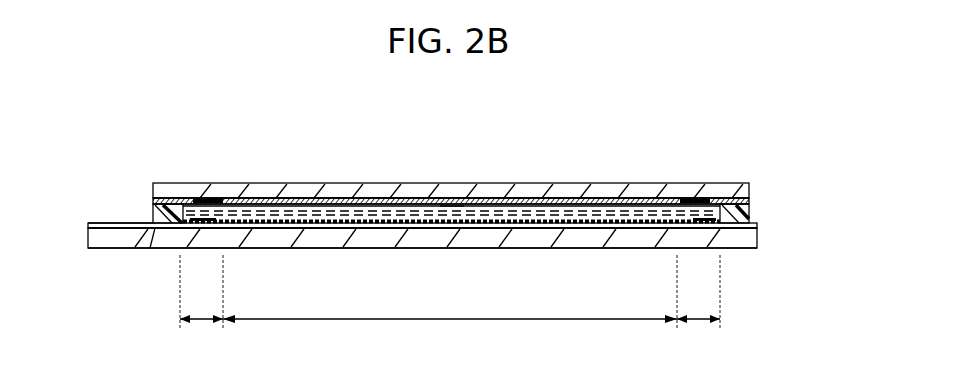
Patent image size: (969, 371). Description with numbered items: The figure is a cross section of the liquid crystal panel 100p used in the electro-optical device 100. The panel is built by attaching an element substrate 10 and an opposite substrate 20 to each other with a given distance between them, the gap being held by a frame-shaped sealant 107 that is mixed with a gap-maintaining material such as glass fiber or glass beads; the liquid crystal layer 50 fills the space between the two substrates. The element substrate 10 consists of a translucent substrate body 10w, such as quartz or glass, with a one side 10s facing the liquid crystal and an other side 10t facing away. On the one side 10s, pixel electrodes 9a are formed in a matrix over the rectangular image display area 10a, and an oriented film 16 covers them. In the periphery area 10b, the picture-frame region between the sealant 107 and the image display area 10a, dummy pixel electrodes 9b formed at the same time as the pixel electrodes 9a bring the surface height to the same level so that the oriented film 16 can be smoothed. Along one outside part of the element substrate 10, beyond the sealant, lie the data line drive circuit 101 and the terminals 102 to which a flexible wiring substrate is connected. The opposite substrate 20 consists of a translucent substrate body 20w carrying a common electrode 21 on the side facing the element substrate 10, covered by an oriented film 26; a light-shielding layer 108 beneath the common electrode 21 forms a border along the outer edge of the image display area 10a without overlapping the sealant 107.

The electro-optical device 100 is at (712, 120).
The liquid crystal panel 100p is at (450, 196).
The element substrate 10 is at (738, 251).
The one side of the element substrate 10s is at (349, 223).
The other side of the element substrate 10t is at (316, 249).
The substrate body 10w is at (758, 227).
The image display area 10a is at (450, 332).
The periphery area 10b is at (450, 302).
The opposite substrate 20 is at (738, 183).
The substrate body 20w is at (747, 200).
The common electrode 21 is at (421, 198).
The oriented film 16 is at (452, 222).
The oriented film 26 is at (483, 204).
The liquid crystal layer 50 is at (555, 214).
The pixel electrode 9a is at (453, 224).
The dummy pixel electrode 9b is at (214, 222).
The data line drive circuit 101 is at (150, 248).
The terminal 102 is at (103, 223).
The sealant 107 is at (158, 205).
The light-shielding layer 108 is at (222, 202).